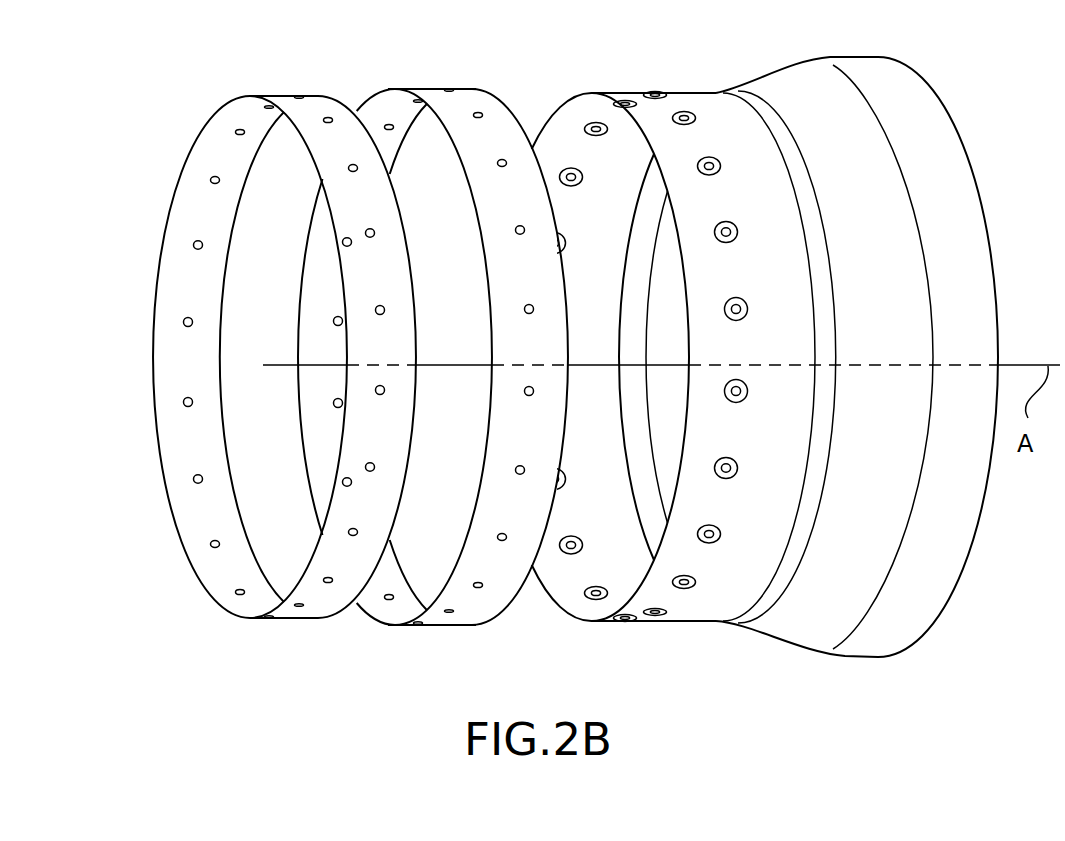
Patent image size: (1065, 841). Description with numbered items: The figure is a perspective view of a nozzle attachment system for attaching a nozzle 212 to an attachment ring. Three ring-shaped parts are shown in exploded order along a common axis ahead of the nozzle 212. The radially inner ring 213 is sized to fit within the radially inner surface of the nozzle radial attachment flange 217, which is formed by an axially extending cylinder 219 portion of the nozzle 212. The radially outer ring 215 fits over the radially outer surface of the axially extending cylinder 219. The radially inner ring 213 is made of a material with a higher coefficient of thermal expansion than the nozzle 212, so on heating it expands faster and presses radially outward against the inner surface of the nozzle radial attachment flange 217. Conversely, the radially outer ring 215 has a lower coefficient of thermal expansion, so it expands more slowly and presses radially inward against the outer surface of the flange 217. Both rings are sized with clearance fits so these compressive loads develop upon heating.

The nozzle 212 is at (955, 177).
The radially inner ring 213 is at (331, 148).
The radially outer ring 215 is at (516, 157).
The nozzle radial attachment flange 217 is at (711, 117).
The axially extending cylinder 219 is at (740, 160).